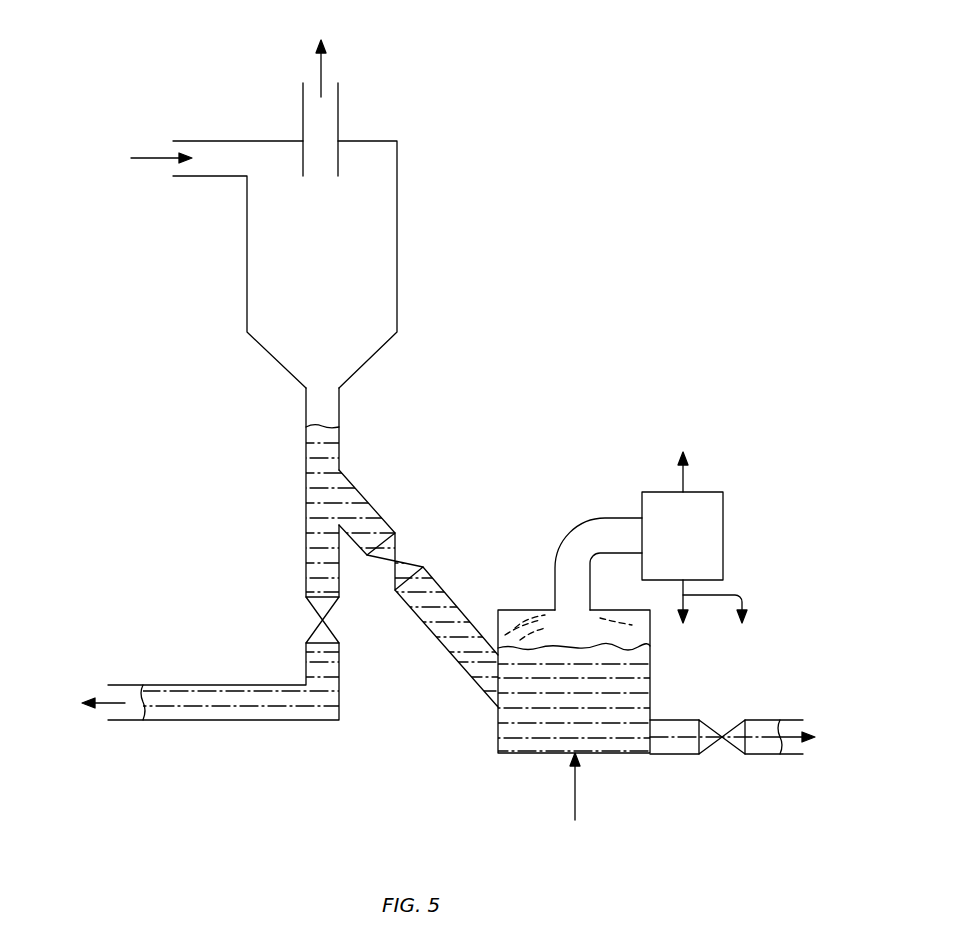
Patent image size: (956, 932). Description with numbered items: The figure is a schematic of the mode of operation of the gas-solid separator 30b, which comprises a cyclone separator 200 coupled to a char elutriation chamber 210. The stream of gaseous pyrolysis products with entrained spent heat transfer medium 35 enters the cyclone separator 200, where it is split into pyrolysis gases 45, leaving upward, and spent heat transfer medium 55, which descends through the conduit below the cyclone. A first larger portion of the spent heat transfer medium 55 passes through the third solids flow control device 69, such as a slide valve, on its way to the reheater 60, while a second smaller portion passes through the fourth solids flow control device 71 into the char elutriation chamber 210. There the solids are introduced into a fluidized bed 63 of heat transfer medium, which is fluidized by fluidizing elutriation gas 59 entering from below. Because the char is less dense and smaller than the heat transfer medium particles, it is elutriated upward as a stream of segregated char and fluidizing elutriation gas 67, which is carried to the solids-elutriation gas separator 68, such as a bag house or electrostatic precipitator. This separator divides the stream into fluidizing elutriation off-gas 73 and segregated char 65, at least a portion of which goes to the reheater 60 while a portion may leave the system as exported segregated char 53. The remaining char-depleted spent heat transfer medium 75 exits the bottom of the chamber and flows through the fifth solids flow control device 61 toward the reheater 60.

The gas-solid separator 30b is at (184, 55).
The gaseous pyrolysis products with entrained spent heat transfer medium 35 is at (147, 157).
The pyrolysis gases 45 is at (320, 62).
The cyclone separator 200 is at (341, 263).
The spent heat transfer medium 55 is at (312, 483).
The fourth solids flow control device 71 is at (396, 558).
The third solids flow control device 69 is at (317, 622).
The reheater 60 is at (447, 690).
The fluidized bed 63 is at (640, 688).
The char elutriation chamber 210 is at (527, 608).
The stream of segregated char and fluidizing elutriation gas 67 is at (605, 530).
The solids-elutriation gas separator 68 is at (698, 550).
The fluidizing elutriation off-gas 73 is at (682, 460).
The segregated char 65 is at (683, 595).
The exported segregated char 53 is at (720, 625).
The fifth solids flow control device 61 is at (720, 727).
The char-depleted spent heat transfer medium 75 is at (795, 733).
The fluidizing elutriation gas 59 is at (578, 783).